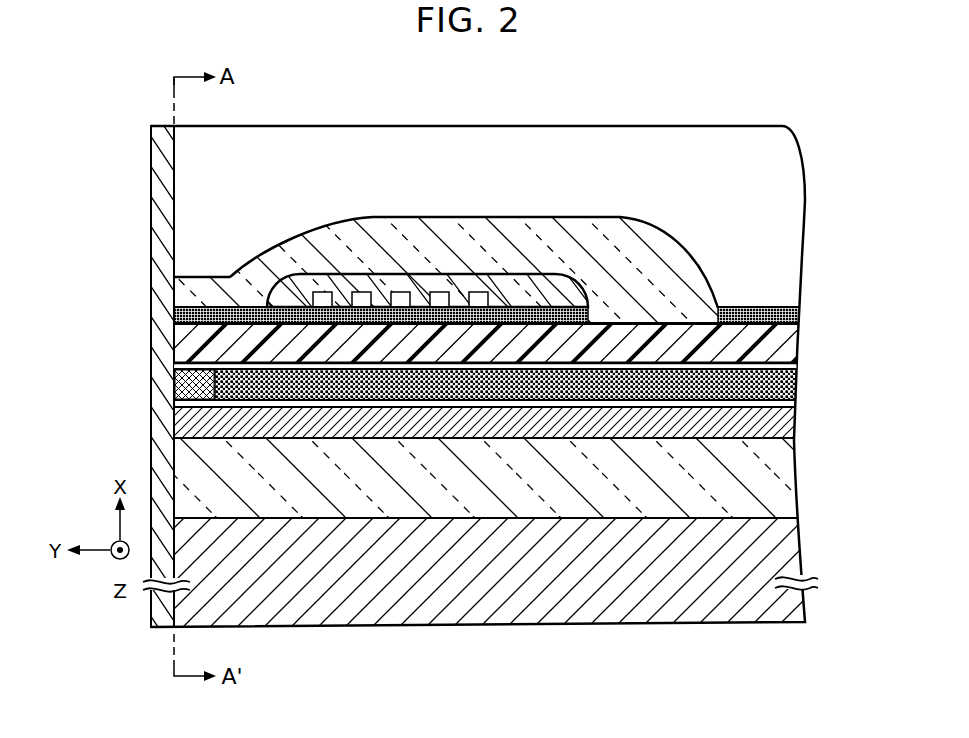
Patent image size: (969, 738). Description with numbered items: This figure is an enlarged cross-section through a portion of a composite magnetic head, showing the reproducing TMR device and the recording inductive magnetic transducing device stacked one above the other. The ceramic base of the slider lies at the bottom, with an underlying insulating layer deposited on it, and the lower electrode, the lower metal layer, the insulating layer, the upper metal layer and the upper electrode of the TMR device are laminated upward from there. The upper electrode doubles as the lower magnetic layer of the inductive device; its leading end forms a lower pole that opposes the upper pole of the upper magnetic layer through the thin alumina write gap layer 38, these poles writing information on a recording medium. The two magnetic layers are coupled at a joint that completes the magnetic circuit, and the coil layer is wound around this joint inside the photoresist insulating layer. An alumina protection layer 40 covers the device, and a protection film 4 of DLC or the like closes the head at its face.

The protection film 4 is at (160, 194).
The write gap layer 38 is at (211, 312).
The protection layer 40 is at (694, 153).